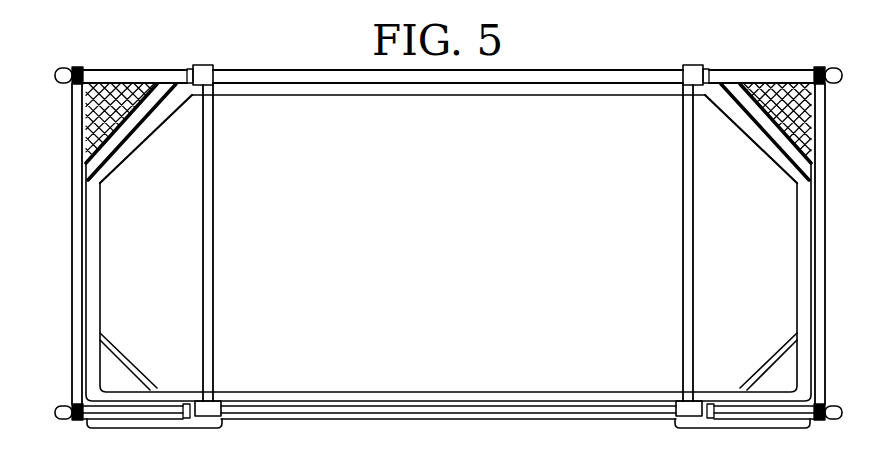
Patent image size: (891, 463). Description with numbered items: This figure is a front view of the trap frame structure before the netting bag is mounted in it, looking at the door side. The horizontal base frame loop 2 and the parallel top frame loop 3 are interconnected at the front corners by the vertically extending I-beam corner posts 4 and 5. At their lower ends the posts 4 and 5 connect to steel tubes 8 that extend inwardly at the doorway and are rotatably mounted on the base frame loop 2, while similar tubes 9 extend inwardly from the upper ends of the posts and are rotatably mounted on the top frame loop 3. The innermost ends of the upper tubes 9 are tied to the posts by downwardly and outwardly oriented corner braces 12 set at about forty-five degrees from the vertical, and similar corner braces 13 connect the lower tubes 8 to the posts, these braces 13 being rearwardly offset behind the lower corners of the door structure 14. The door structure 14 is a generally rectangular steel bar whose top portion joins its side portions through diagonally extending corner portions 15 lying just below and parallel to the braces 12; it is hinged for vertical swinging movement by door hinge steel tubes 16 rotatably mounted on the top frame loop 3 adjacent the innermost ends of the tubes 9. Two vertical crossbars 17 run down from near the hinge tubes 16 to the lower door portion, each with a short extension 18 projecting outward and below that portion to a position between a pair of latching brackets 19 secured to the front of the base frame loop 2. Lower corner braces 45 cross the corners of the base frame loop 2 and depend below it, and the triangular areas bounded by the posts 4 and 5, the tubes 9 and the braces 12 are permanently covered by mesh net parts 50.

The base frame loop 2 is at (310, 420).
The top frame loop 3 is at (550, 68).
The front corner post 4 is at (827, 230).
The front corner post 5 is at (72, 213).
The steel tube 8 is at (108, 413).
The tube 9 is at (160, 78).
The corner brace 12 is at (757, 117).
The corner brace 13 is at (123, 353).
The door structure 14 is at (558, 95).
The diagonally extending corner portion 15 is at (775, 150).
The door hinge steel tube 16 is at (210, 63).
The vertical crossbar 17 is at (213, 283).
The extension 18 is at (213, 390).
The latching bracket 19 is at (227, 400).
The lower corner brace 45 is at (133, 427).
The mesh net part 50 is at (91, 66).